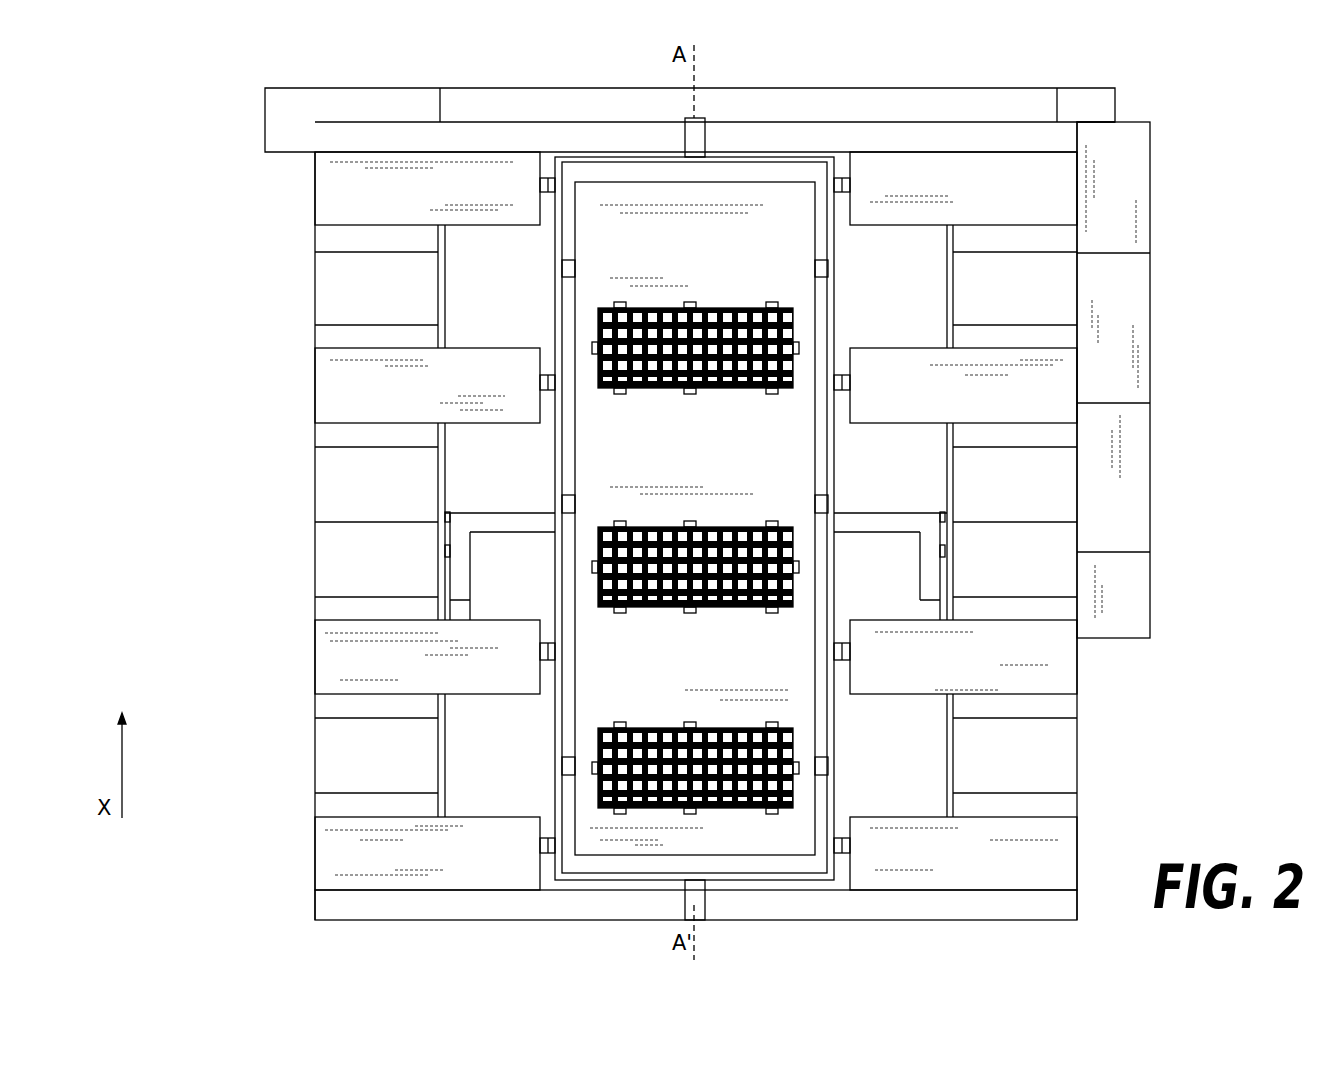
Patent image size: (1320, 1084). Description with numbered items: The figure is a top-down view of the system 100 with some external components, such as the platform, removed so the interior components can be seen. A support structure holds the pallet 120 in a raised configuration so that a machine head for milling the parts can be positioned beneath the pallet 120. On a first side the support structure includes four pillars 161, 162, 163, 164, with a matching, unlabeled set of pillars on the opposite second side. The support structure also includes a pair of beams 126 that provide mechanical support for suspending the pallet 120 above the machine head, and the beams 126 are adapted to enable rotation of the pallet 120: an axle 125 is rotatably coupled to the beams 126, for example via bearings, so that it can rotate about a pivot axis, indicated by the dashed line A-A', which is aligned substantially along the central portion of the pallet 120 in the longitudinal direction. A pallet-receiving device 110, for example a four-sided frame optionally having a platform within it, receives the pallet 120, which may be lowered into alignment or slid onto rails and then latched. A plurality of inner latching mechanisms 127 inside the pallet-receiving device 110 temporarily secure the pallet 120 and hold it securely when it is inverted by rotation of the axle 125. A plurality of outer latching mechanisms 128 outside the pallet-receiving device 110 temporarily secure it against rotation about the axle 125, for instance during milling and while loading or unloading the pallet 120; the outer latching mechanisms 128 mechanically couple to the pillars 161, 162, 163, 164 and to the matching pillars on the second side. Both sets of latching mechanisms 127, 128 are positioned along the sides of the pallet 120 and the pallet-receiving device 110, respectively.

The system 100 is at (219, 161).
The pallet-receiving device 110 is at (780, 170).
The pallet 120 is at (622, 185).
The axle 125 is at (703, 135).
The beams 126 is at (1060, 137).
The inner latching mechanisms 127 is at (828, 270).
The outer latching mechanisms 128 is at (540, 185).
The pillar 161 is at (330, 845).
The pillar 162 is at (330, 658).
The pillar 163 is at (330, 385).
The pillar 164 is at (330, 205).